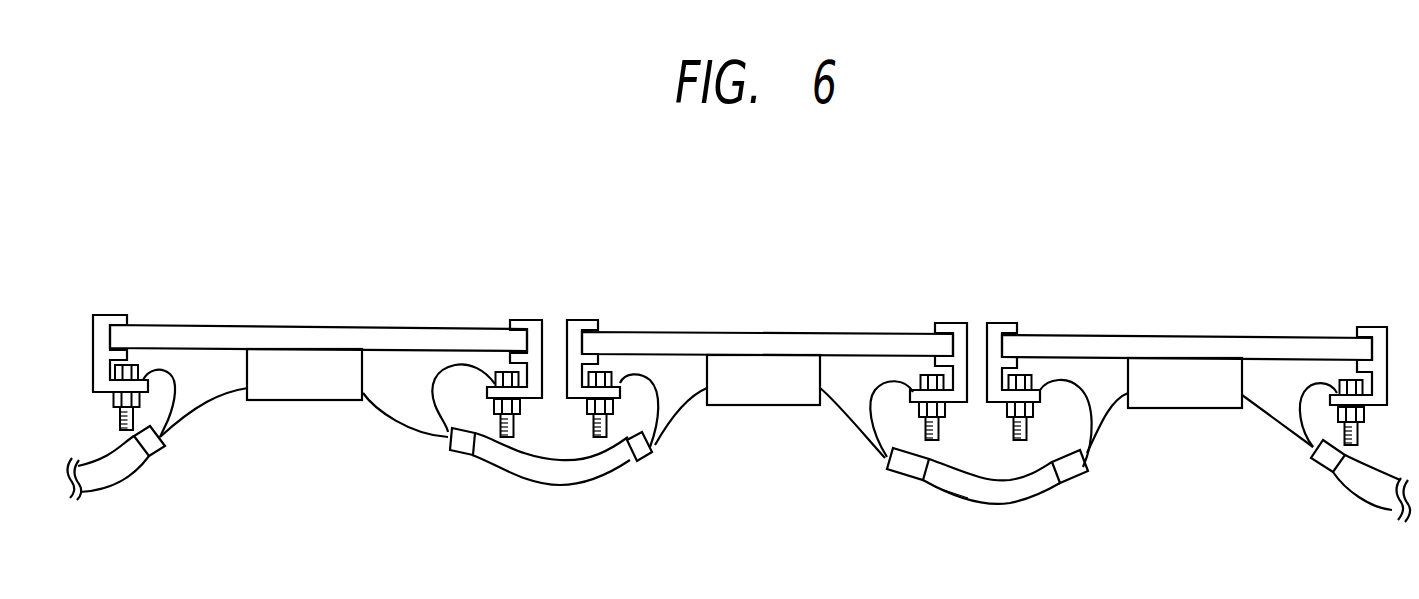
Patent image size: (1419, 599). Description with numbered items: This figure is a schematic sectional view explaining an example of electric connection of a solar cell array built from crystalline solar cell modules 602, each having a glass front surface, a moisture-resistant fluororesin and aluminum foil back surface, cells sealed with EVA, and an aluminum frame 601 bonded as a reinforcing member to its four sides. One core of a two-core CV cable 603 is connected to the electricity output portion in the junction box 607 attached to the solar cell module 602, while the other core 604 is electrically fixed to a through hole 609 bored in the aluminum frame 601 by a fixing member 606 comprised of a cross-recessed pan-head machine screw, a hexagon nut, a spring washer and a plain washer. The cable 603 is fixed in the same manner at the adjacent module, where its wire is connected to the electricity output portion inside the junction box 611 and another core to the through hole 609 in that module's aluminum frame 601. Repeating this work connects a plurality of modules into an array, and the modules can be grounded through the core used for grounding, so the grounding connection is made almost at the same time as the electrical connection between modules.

The aluminum frame 601 is at (110, 314).
The solar cell module 602 is at (785, 308).
The two-core CV cable 603 is at (1045, 493).
The other core 604 is at (875, 390).
The fixing member 606 is at (933, 441).
The junction box 607 is at (748, 406).
The through hole 609 is at (985, 409).
The junction box 611 is at (1180, 409).